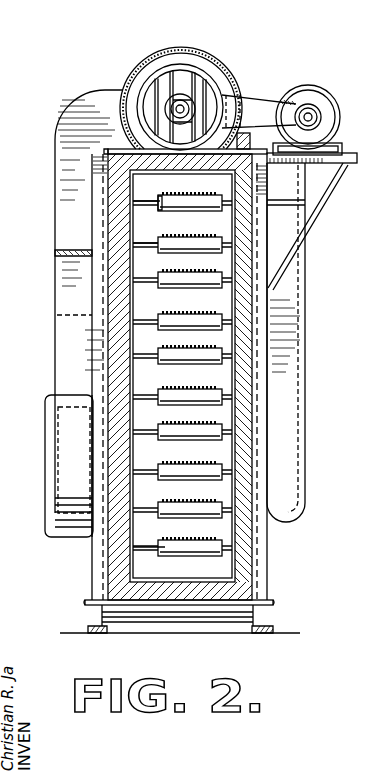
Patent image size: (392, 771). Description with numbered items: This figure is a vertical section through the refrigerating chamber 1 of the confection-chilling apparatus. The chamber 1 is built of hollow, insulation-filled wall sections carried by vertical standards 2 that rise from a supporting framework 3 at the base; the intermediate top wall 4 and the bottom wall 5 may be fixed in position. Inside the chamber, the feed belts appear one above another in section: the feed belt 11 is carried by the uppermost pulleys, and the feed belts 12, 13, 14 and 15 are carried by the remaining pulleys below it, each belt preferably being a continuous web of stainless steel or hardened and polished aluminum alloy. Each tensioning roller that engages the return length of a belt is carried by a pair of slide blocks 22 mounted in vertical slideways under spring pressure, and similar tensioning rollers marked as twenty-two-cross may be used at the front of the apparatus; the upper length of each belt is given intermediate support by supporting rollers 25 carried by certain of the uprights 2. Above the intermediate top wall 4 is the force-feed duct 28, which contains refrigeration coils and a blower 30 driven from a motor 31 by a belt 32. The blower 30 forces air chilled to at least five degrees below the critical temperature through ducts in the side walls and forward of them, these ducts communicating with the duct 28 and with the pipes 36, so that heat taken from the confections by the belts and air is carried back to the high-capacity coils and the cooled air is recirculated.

The refrigerating chamber 1 is at (258, 542).
The vertical standards 2 is at (263, 568).
The supporting framework 3 is at (257, 617).
The intermediate top wall 4 is at (182, 169).
The bottom wall 5 is at (180, 578).
The feed belt 11 is at (168, 236).
The feed belt 12 is at (188, 268).
The feed belt 13 is at (188, 345).
The feed belt 14 is at (183, 424).
The feed belt 15 is at (187, 499).
The slide blocks 22 is at (167, 552).
The supporting rollers 25 is at (160, 202).
The force-feed duct 28 is at (107, 143).
The blower 30 is at (198, 77).
The motor 31 is at (330, 112).
The belt 32 is at (280, 97).
The pipes 36 is at (302, 315).